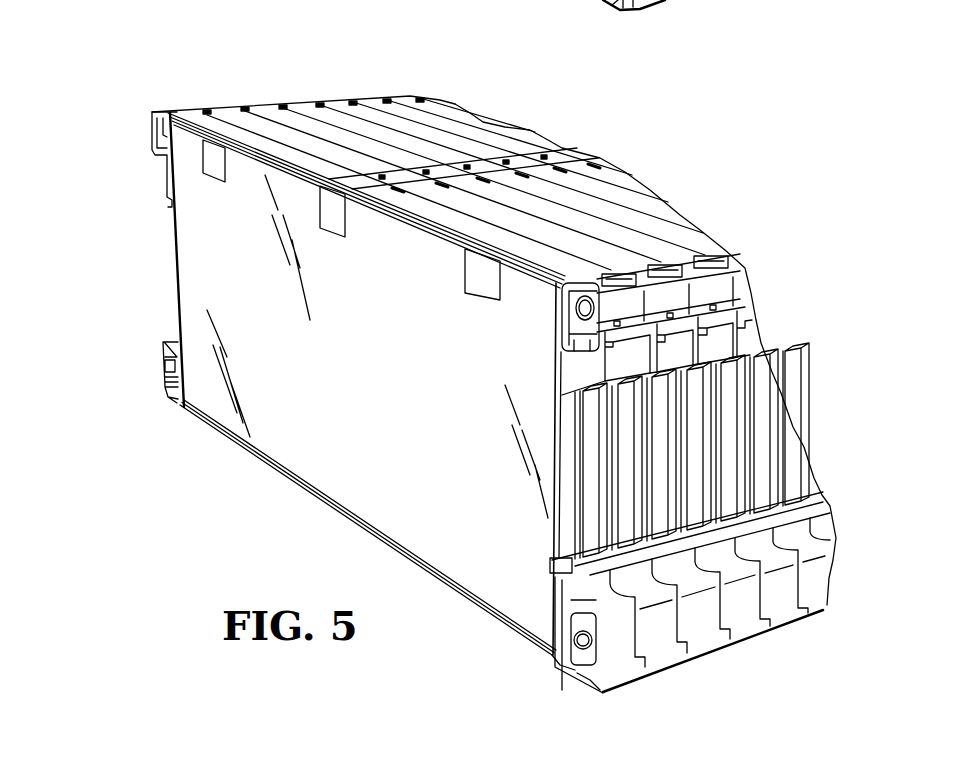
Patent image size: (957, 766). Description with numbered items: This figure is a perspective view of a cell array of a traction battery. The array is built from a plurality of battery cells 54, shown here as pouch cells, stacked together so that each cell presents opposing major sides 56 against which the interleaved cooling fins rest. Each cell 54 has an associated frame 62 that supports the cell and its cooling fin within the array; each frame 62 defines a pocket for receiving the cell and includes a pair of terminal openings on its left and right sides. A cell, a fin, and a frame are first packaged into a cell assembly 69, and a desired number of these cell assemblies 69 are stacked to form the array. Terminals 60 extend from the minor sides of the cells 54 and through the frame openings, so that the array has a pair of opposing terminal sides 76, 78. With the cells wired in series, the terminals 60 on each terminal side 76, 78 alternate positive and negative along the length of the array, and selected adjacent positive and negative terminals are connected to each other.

The battery cell 54 is at (203, 262).
The major side 56 is at (372, 382).
The terminal 60 is at (717, 433).
The frame 62 is at (277, 148).
The cell assembly 69 is at (333, 120).
The terminal side 76 is at (714, 341).
The terminal side 78 is at (165, 172).